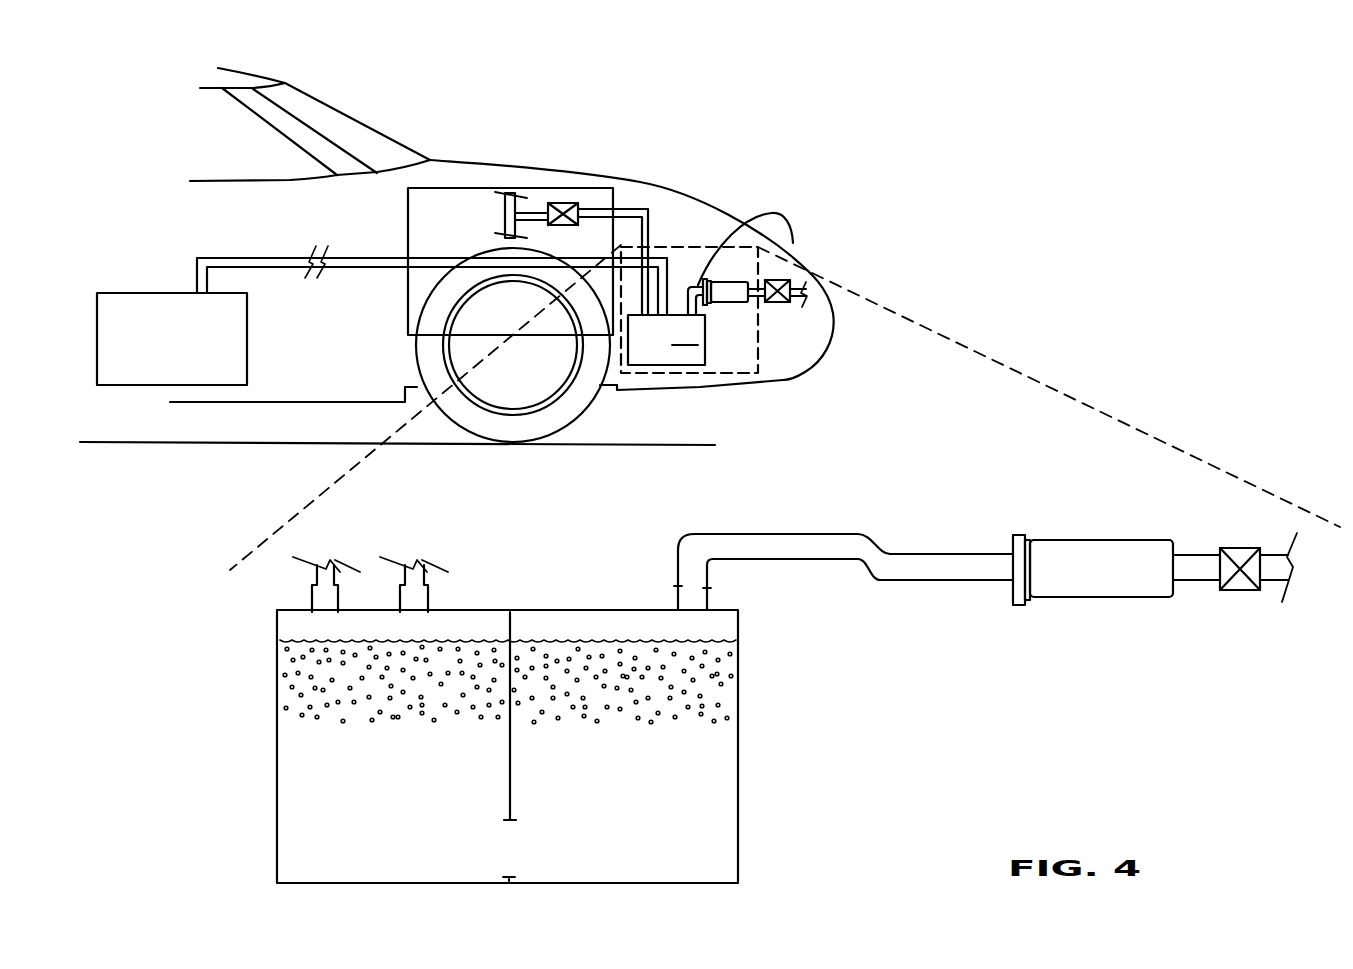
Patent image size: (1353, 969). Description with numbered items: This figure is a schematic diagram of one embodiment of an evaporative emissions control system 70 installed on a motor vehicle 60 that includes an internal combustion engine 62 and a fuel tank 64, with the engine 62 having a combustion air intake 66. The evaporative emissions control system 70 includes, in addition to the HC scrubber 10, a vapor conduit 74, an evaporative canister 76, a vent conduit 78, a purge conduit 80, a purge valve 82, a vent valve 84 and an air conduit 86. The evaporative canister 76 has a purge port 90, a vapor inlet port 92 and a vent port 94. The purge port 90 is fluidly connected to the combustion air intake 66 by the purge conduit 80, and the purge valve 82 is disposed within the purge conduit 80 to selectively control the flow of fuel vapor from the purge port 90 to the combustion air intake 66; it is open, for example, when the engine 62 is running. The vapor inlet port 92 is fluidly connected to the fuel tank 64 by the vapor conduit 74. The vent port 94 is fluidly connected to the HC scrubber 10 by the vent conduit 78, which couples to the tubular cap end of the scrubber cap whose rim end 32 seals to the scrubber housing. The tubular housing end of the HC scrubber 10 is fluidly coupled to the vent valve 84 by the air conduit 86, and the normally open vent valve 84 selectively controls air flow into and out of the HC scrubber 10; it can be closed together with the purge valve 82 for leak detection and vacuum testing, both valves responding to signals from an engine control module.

The HC scrubber 10 is at (722, 297).
The rim end 32 is at (1012, 532).
The motor vehicle 60 is at (793, 243).
The internal combustion engine 62 is at (538, 188).
The fuel tank 64 is at (153, 293).
The combustion air intake 66 is at (503, 207).
The evaporative emissions control system 70 is at (702, 218).
The vapor conduit 74 is at (343, 258).
The evaporative canister 76 is at (742, 725).
The vent conduit 78 is at (757, 213).
The purge conduit 80 is at (638, 207).
The purge valve 82 is at (570, 203).
The vent valve 84 is at (793, 274).
The air conduit 86 is at (797, 302).
The purge port 90 is at (312, 595).
The vapor inlet port 92 is at (430, 598).
The vent port 94 is at (707, 590).